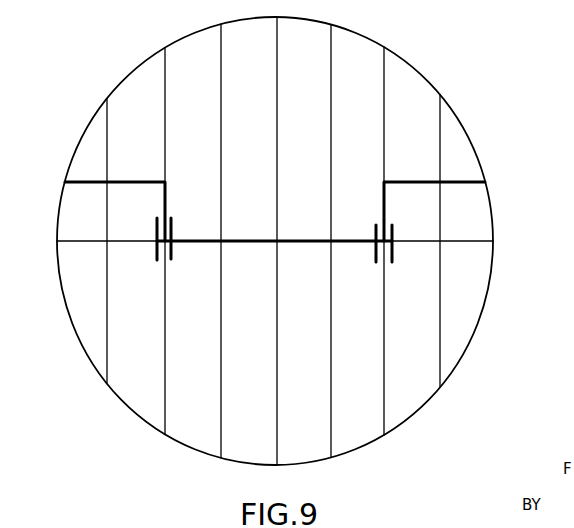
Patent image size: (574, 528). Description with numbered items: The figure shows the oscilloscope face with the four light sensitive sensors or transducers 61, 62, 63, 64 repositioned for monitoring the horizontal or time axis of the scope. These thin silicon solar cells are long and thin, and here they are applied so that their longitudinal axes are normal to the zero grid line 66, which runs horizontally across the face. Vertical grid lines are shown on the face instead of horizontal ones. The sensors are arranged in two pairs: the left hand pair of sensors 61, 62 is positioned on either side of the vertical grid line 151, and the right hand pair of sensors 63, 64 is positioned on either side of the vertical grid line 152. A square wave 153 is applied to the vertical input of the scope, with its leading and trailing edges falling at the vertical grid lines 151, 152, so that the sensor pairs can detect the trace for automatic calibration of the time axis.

The vertical grid line 151 is at (165, 118).
The vertical grid line 152 is at (385, 90).
The square wave 153 is at (140, 181).
The light sensitive sensor 61 is at (157, 260).
The light sensitive sensor 62 is at (173, 254).
The light sensitive sensor 63 is at (376, 259).
The light sensitive sensor 64 is at (393, 257).
The zero grid line 66 is at (465, 243).